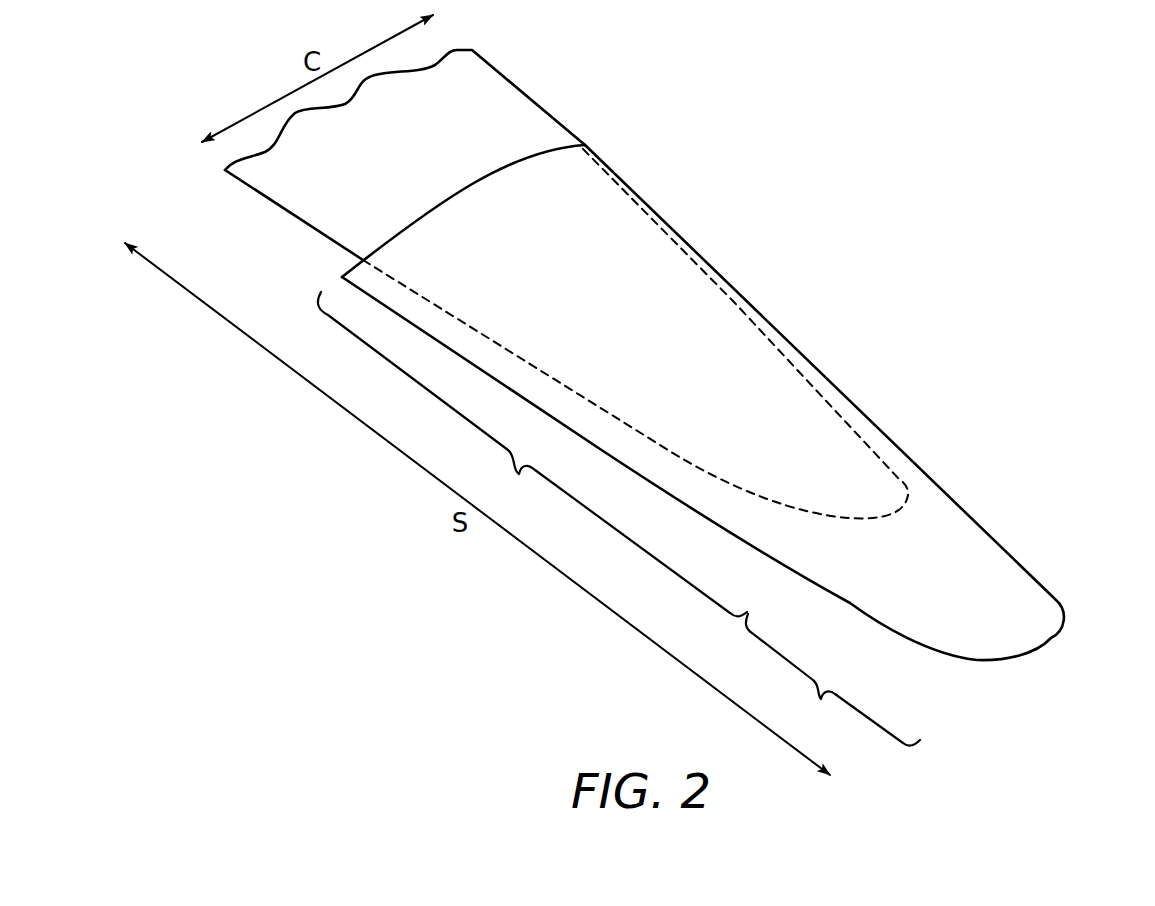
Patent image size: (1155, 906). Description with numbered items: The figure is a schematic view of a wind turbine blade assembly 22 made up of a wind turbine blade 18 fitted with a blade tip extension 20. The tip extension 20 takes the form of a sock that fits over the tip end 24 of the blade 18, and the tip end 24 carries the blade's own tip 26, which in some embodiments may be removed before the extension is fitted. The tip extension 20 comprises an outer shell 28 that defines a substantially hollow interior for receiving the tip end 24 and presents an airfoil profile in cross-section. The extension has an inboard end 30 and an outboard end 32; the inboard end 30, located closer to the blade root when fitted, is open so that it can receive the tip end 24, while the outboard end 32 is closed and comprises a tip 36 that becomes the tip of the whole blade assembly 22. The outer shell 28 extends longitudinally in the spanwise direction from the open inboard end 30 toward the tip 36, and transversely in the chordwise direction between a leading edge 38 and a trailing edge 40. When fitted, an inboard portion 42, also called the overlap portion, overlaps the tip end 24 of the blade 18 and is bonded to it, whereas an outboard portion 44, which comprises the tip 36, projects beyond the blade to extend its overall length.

The wind turbine blade 18 is at (497, 92).
The blade tip extension 20 is at (1025, 569).
The wind turbine blade assembly 22 is at (759, 94).
The tip end 24 is at (725, 321).
The tip 26 is at (915, 485).
The outer shell 28 is at (1032, 605).
The inboard end 30 is at (547, 141).
The outboard end 32 is at (1057, 643).
The tip 36 is at (1018, 654).
The leading edge 38 is at (843, 393).
The trailing edge 40 is at (353, 288).
The inboard portion 42 is at (532, 454).
The outboard portion 44 is at (833, 680).